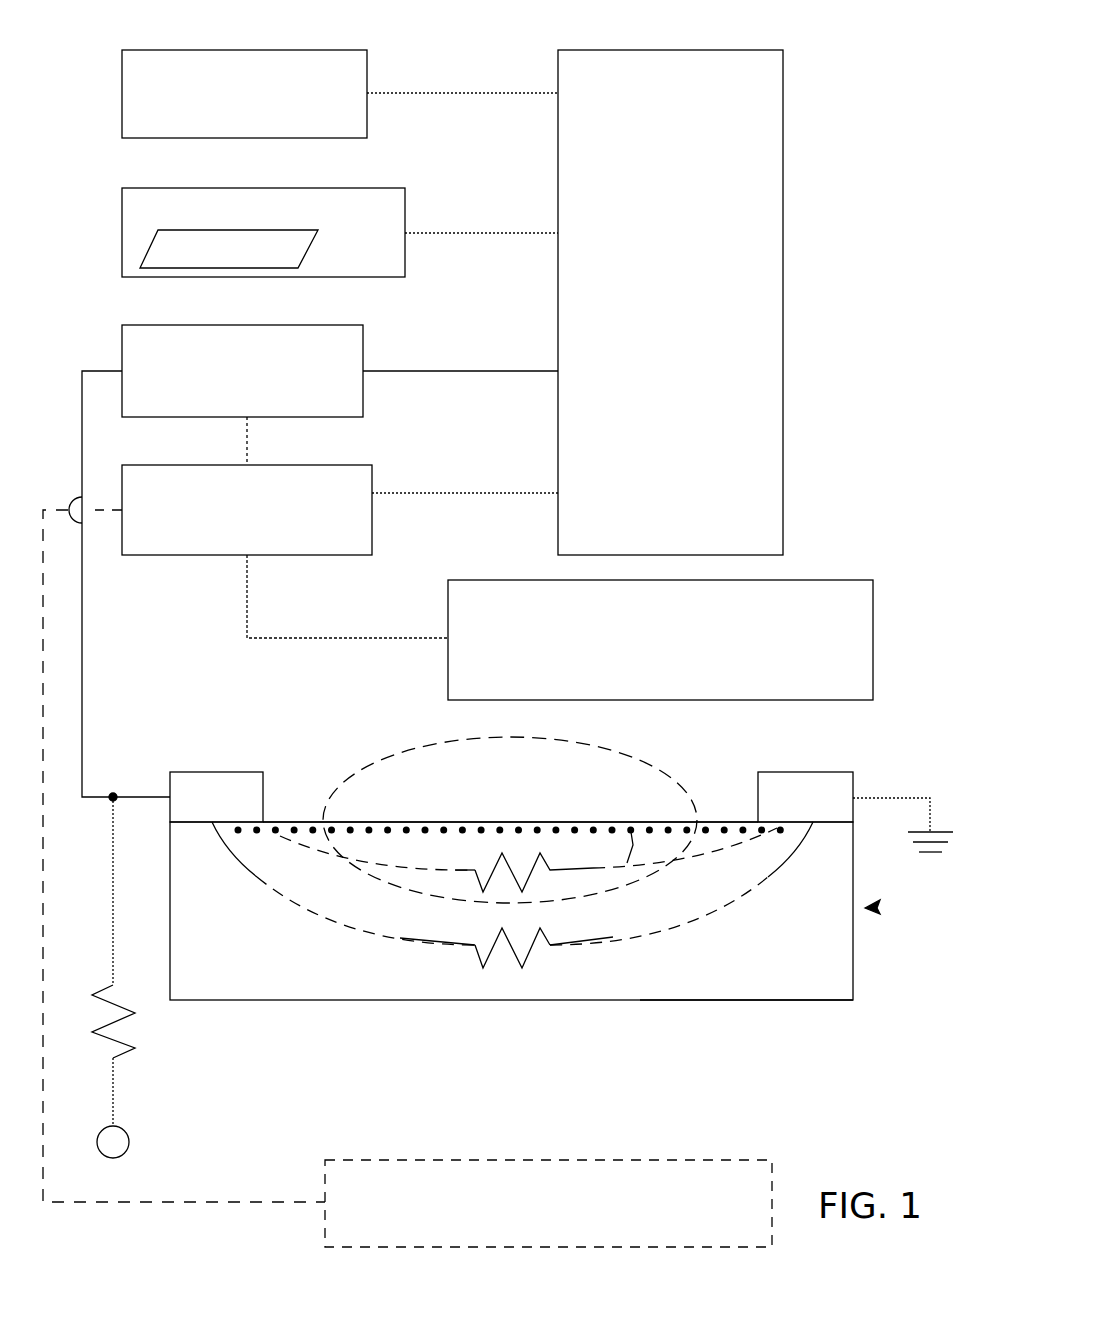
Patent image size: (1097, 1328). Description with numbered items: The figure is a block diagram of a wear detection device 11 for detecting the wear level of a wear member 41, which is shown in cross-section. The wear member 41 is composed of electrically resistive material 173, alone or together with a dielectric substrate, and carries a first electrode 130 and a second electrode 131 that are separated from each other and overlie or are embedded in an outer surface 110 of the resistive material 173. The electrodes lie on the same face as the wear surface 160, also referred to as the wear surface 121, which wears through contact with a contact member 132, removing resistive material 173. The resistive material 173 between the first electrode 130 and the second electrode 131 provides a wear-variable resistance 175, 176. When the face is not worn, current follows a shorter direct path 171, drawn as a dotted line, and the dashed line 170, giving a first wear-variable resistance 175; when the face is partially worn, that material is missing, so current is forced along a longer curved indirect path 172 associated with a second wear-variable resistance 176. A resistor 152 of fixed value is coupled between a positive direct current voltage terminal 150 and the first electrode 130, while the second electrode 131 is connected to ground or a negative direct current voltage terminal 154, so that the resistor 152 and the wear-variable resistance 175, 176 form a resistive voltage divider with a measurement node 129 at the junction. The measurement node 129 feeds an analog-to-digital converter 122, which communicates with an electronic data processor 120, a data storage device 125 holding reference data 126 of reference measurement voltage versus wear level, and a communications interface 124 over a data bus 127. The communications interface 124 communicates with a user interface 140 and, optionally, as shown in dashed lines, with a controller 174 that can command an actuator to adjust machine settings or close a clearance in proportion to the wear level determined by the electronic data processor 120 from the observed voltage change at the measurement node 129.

The wear detection device 11 is at (840, 300).
The wear member 41 is at (872, 907).
The outer surface 110 is at (255, 822).
The electronic data processor 120 is at (343, 48).
The wear surface 121 is at (717, 822).
The analog-to-digital converter 122 is at (365, 342).
The communications interface 124 is at (373, 470).
The data storage device 125 is at (383, 188).
The reference data 126 is at (310, 246).
The data bus 127 is at (783, 150).
The measurement node 129 is at (115, 795).
The first electrode 130 is at (193, 810).
The second electrode 131 is at (781, 810).
The contact member 132 is at (653, 757).
The user interface 140 is at (828, 580).
The positive direct current voltage terminal 150 is at (126, 1132).
The resistor 152 is at (135, 1022).
The negative direct current voltage terminal 154 is at (905, 798).
The wear surface 160 is at (343, 822).
The dashed line 170 is at (447, 828).
The direct path 171 is at (293, 830).
The indirect path 172 is at (317, 912).
The electrically resistive material 173 is at (683, 953).
The controller 174 is at (655, 1158).
The first wear-variable resistance 175 is at (543, 853).
The second wear-variable resistance 176 is at (522, 968).